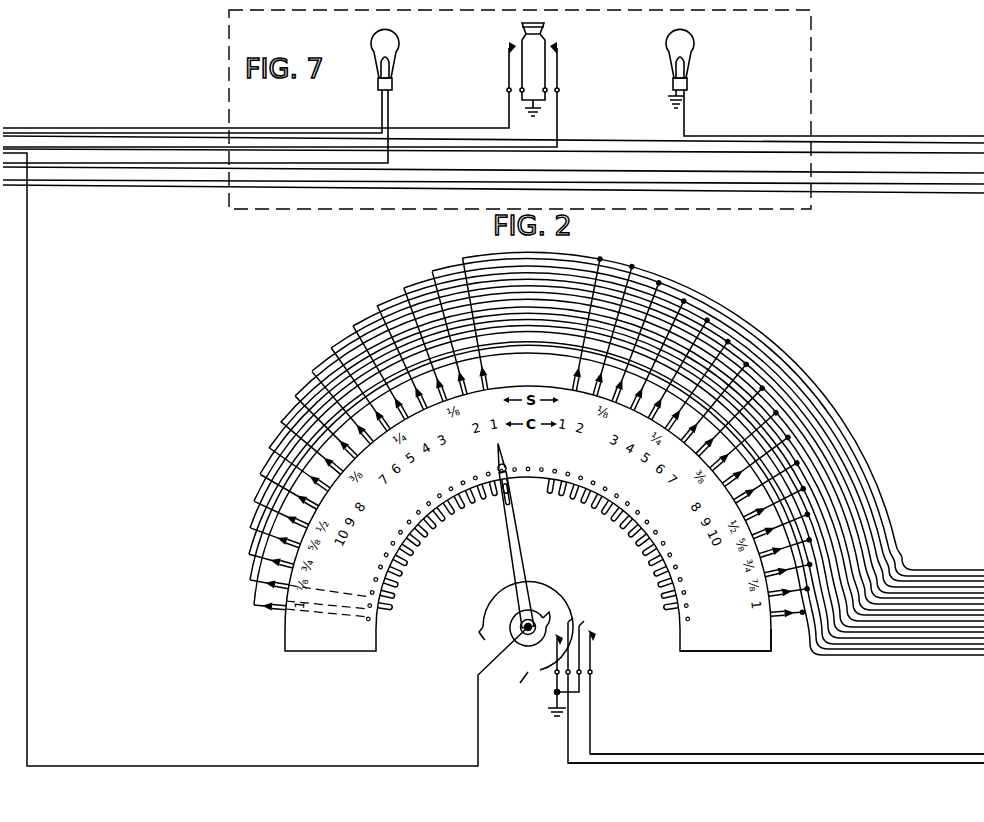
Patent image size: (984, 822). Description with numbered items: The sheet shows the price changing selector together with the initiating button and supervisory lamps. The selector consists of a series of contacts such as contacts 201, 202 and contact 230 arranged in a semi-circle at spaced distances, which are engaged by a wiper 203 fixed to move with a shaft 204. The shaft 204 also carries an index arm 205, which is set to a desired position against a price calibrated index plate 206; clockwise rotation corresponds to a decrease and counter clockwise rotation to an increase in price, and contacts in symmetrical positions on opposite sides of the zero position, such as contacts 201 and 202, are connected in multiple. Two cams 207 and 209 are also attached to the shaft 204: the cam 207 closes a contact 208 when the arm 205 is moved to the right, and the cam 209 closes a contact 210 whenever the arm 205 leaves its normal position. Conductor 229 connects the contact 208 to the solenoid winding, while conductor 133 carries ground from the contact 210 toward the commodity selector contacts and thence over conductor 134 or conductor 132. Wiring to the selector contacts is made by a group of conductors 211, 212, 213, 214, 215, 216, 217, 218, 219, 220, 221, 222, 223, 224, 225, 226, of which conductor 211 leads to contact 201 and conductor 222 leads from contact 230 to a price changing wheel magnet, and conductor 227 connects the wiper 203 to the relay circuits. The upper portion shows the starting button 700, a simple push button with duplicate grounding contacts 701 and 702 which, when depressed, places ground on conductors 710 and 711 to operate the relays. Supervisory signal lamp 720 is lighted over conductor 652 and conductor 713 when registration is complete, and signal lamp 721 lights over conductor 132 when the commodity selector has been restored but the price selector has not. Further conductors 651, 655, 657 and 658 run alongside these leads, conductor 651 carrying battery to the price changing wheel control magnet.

In FIG. 7, the starting button 700 is at (544, 26).
In FIG. 7, the grounding contact 701 is at (558, 52).
In FIG. 7, the grounding contact 702 is at (509, 52).
In FIG. 7, the conductor 710 is at (508, 109).
In FIG. 7, the conductor 711 is at (558, 109).
In FIG. 7, the conductor 713 is at (381, 109).
In FIG. 7, the supervisory signal lamp 720 is at (372, 45).
In FIG. 7, the supervisory signal lamp 721 is at (690, 42).
In FIG. 7, the conductor 652 is at (389, 109).
In FIG. 7, the conductor 132 is at (700, 135).
In FIG. 7, the conductor 134 is at (107, 137).
In FIG. 7, the conductor 651 is at (162, 149).
In FIG. 7, the conductor 655 is at (197, 168).
In FIG. 7, the conductor 657 is at (238, 181).
In FIG. 7, the conductor 658 is at (285, 186).
In FIG. 2, the contact 201 is at (487, 386).
In FIG. 2, the contact 202 is at (573, 386).
In FIG. 2, the wiper 203 is at (512, 498).
In FIG. 2, the shaft 204 is at (545, 622).
In FIG. 2, the index arm 205 is at (524, 555).
In FIG. 2, the price calibrated index plate 206 is at (734, 655).
In FIG. 2, the cam 207 is at (488, 638).
In FIG. 2, the contact 208 is at (594, 633).
In FIG. 2, the cam 209 is at (526, 672).
In FIG. 2, the contact 210 is at (571, 626).
In FIG. 2, the conductor 211 is at (631, 266).
In FIG. 2, the wire 212 is at (652, 279).
In FIG. 2, the wire 213 is at (679, 291).
In FIG. 2, the wire 214 is at (705, 300).
In FIG. 2, the wire 215 is at (725, 314).
In FIG. 2, the wire 216 is at (749, 327).
In FIG. 2, the wire 217 is at (765, 341).
In FIG. 2, the wire 218 is at (785, 353).
In FIG. 2, the wire 219 is at (801, 367).
In FIG. 2, the wire 220 is at (817, 381).
In FIG. 2, the wire 221 is at (827, 396).
In FIG. 2, the conductor 222 is at (838, 409).
In FIG. 2, the wire 223 is at (849, 425).
In FIG. 2, the wire 224 is at (859, 439).
In FIG. 2, the wire 225 is at (864, 453).
In FIG. 2, the wire 226 is at (871, 466).
In FIG. 2, the conductor 227 is at (232, 766).
In FIG. 2, the conductor 229 is at (641, 743).
In FIG. 2, the conductor 133 is at (737, 763).
In FIG. 2, the contact 230 is at (660, 570).